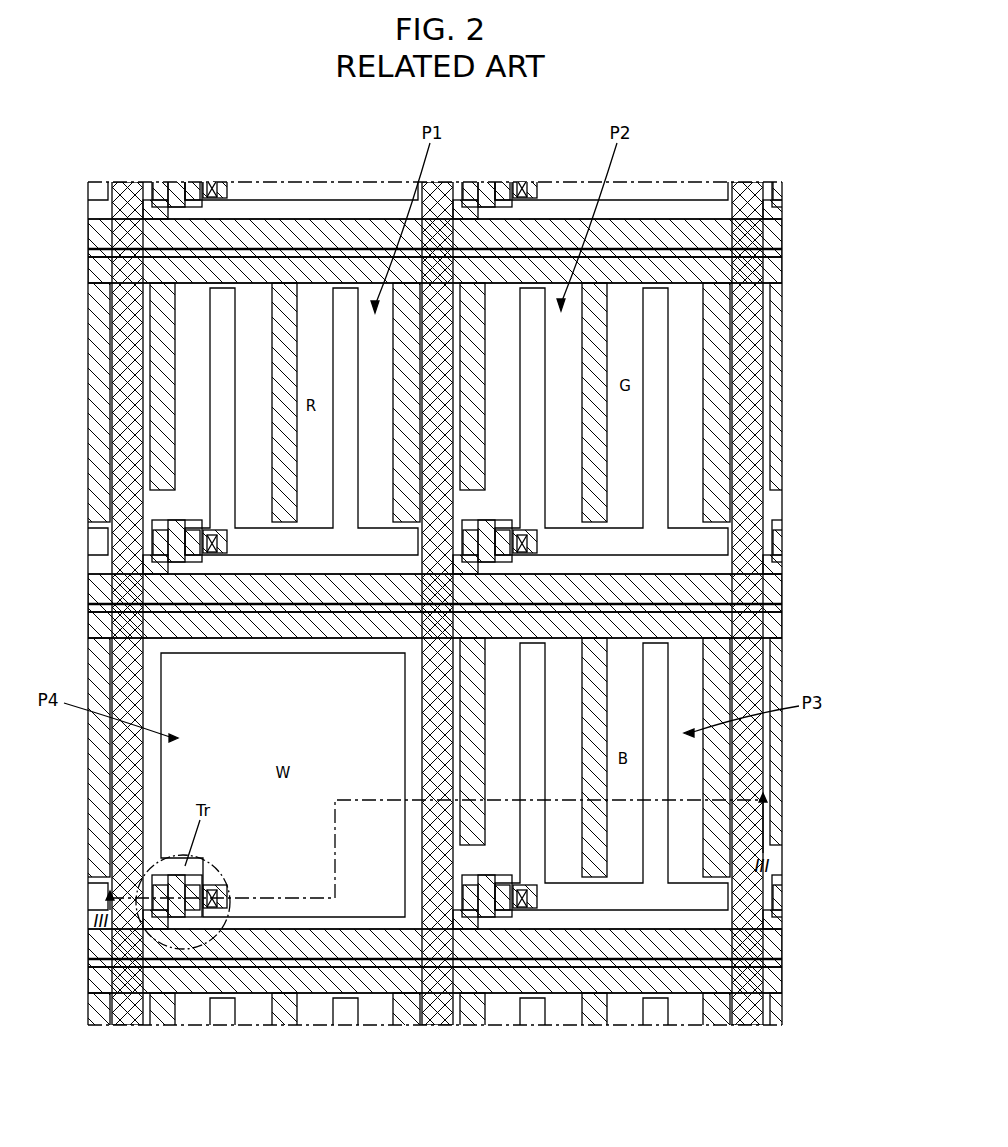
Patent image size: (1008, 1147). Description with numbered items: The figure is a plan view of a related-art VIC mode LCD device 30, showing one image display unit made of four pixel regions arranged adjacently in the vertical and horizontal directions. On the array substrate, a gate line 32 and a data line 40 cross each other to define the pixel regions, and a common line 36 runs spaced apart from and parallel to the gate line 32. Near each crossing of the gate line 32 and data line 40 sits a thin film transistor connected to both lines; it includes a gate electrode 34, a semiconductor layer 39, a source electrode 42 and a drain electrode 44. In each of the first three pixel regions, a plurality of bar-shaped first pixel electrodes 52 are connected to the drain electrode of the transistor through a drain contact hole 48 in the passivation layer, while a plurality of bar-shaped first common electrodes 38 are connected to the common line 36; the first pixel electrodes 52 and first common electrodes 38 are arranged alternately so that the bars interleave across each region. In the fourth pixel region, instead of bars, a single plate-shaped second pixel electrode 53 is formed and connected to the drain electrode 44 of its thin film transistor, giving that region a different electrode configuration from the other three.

The LCD device 30 is at (715, 150).
The gate line 32 is at (315, 592).
The gate electrode 34 is at (177, 565).
The common line 36 is at (775, 276).
The first common electrode 38 is at (165, 343).
The semiconductor layer 39 is at (199, 565).
The data line 40 is at (120, 383).
The source electrode 42 is at (165, 543).
The drain electrode 44 is at (210, 524).
The drain contact hole 48 is at (216, 530).
The first pixel electrode 52 is at (220, 298).
The second pixel electrode 53 is at (152, 753).